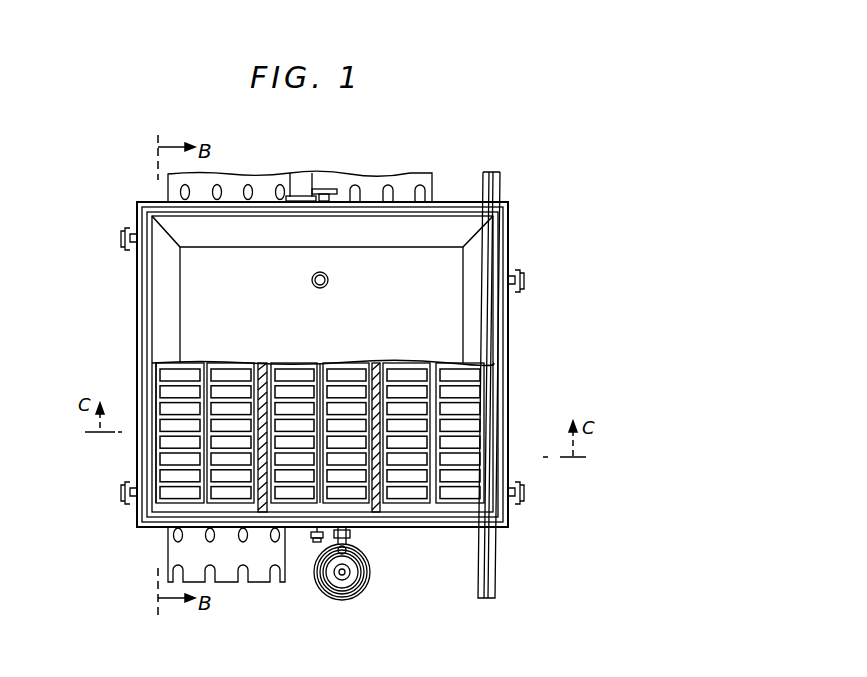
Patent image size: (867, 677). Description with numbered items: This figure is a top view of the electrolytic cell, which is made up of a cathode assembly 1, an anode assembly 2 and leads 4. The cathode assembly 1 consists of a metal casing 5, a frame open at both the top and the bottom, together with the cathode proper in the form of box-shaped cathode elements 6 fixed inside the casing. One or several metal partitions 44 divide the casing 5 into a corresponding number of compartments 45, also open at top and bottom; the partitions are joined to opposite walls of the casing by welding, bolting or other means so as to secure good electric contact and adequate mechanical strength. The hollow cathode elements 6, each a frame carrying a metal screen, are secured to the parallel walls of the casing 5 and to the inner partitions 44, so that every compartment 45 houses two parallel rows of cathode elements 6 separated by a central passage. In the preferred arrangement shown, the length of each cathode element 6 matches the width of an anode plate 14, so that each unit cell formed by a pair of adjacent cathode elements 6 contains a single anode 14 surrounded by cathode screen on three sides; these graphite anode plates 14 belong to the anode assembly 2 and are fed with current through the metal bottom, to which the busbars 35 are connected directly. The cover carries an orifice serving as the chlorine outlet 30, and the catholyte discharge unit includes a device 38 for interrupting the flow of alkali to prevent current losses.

The cathode assembly 1 is at (485, 440).
The anode assembly 2 is at (475, 465).
The leads 4 is at (488, 580).
The metal casing 5 is at (500, 392).
The cathode elements 6 is at (163, 383).
The anode plate 14 is at (165, 446).
The chlorine outlet 30 is at (327, 275).
The busbars 35 is at (332, 178).
The device for interrupting the flow of alkali 38 is at (366, 582).
The metal partitions 44 is at (379, 372).
The compartments 45 is at (321, 372).